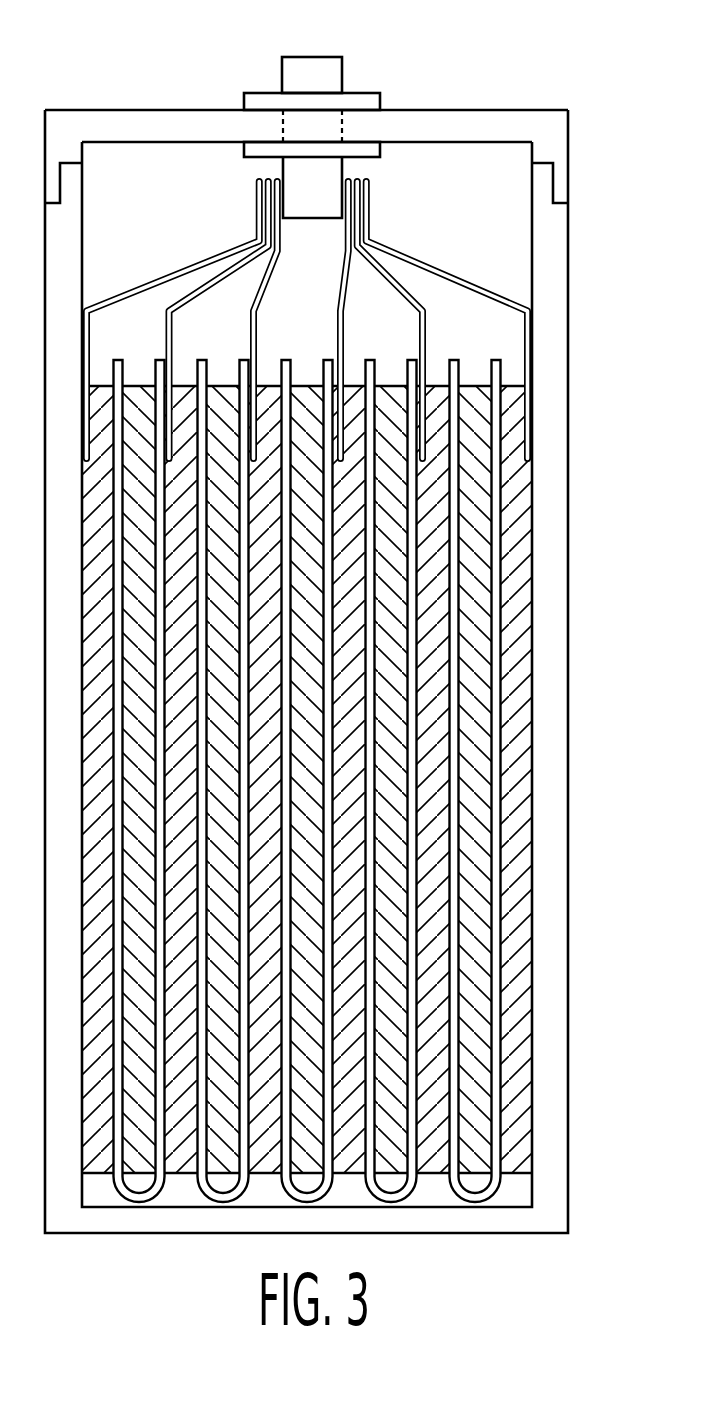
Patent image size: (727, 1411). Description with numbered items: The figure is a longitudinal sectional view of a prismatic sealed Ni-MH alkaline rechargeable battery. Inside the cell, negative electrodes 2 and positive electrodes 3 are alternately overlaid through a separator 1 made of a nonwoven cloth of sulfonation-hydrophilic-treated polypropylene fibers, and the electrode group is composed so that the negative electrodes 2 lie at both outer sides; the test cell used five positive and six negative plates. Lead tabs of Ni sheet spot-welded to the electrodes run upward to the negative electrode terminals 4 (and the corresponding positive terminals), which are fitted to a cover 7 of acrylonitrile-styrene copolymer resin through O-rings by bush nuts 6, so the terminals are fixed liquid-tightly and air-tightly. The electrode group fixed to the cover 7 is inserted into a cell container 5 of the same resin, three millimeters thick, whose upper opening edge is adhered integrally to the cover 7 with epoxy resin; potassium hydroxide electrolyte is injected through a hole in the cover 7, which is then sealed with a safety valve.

The separator 1 is at (497, 718).
The negative electrodes 2 is at (525, 510).
The positive electrodes 3 is at (483, 445).
The negative electrode terminals 4 is at (298, 175).
The cell container 5 is at (555, 828).
The bush nuts 6 is at (363, 92).
The cover 7 is at (555, 140).